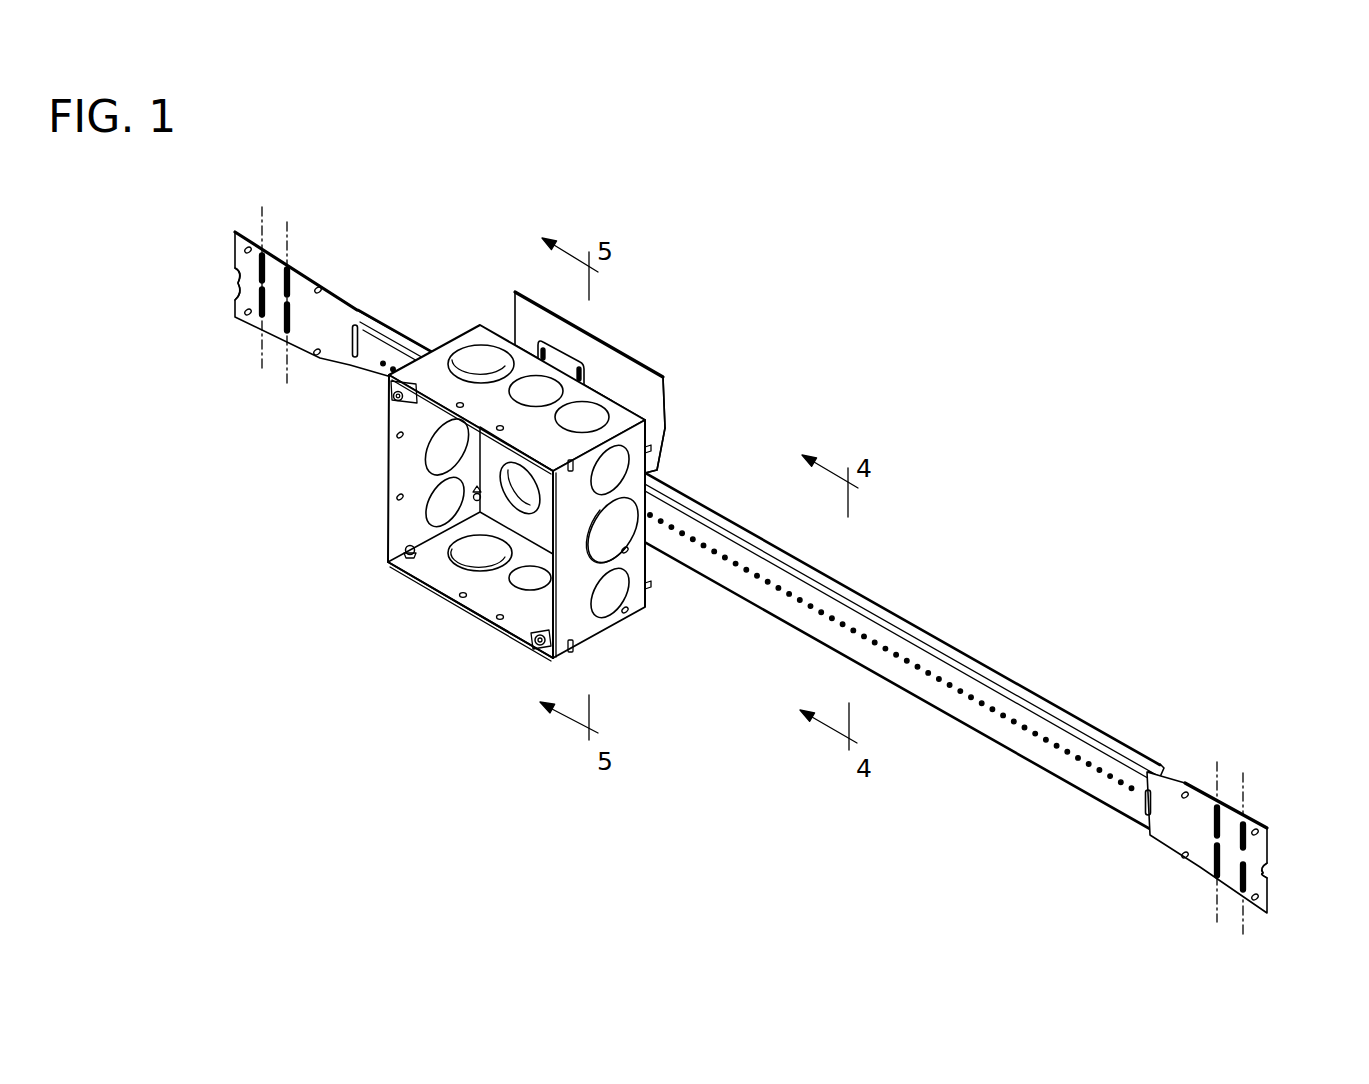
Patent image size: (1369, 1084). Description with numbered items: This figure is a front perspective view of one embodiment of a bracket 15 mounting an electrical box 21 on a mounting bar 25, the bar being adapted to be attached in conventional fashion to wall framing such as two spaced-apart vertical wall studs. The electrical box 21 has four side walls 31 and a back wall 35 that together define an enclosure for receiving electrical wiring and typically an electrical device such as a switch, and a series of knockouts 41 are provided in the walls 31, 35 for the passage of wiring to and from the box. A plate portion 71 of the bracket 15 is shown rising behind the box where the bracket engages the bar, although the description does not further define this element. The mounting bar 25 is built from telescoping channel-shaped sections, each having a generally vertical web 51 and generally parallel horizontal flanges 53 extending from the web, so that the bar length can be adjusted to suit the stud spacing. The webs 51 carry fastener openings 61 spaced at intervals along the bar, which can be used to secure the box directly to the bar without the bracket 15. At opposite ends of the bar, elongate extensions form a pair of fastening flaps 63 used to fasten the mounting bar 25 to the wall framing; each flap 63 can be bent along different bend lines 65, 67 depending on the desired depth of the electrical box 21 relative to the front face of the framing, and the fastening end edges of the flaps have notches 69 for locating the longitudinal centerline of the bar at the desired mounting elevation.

The bracket 15 is at (668, 413).
The electrical box 21 is at (478, 504).
The mounting bar 25 is at (761, 579).
The side walls 31 is at (432, 363).
The back wall 35 is at (390, 568).
The knockouts 41 is at (473, 363).
The web 51 is at (1072, 781).
The flanges 53 is at (1070, 717).
The fastener openings 61 is at (702, 542).
The fastening flaps 63 is at (747, 533).
The bend line 65 is at (260, 217).
The bend line 67 is at (290, 227).
The notches 69 is at (240, 272).
The back plate 71 is at (646, 379).